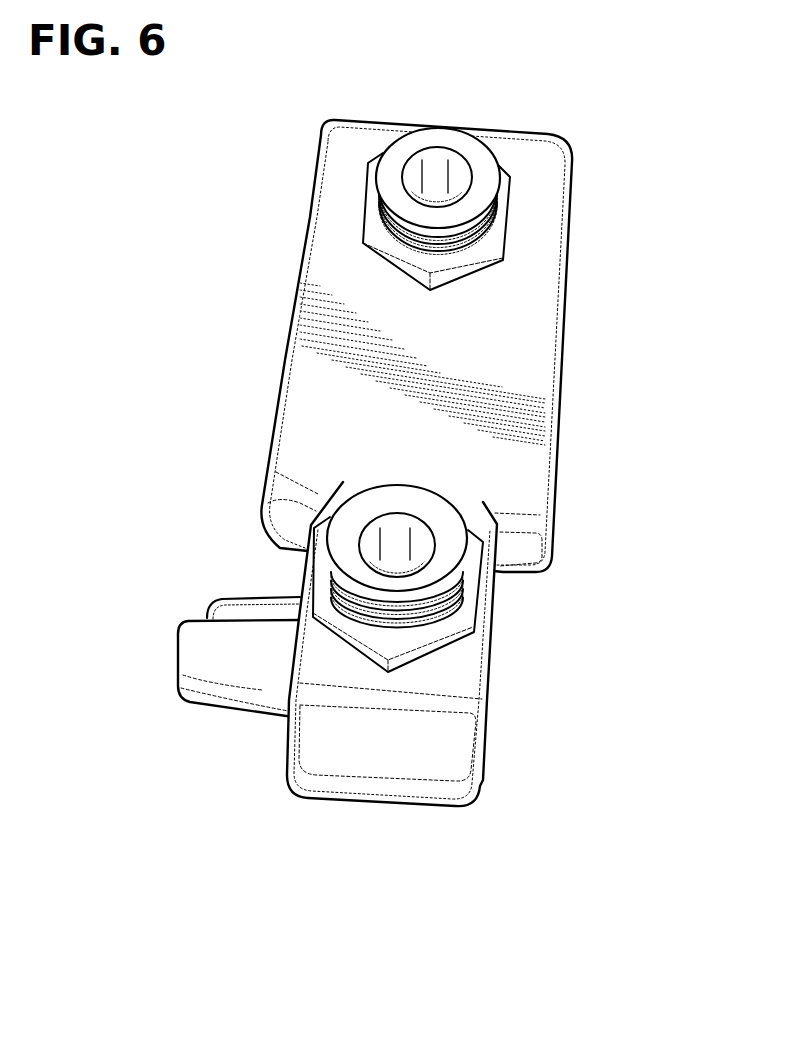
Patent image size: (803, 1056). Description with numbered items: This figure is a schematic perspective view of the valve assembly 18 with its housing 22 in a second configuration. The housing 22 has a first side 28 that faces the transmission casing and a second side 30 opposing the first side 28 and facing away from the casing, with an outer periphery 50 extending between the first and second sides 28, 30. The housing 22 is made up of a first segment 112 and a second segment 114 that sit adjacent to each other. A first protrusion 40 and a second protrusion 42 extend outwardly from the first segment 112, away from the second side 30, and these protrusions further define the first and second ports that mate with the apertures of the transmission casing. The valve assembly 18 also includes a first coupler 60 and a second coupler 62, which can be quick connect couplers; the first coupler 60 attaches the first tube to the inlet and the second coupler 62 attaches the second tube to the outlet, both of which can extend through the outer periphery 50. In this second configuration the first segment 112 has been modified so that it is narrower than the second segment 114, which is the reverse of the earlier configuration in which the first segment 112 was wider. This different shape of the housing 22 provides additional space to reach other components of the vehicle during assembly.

The valve assembly 18 is at (607, 137).
The housing 22 is at (520, 553).
The first side 28 is at (300, 588).
The second side 30 is at (487, 703).
The first protrusion 40 is at (227, 693).
The second protrusion 42 is at (232, 606).
The outer periphery 50 is at (547, 314).
The first coupler 60 is at (462, 608).
The second coupler 62 is at (494, 232).
The first segment 112 is at (302, 748).
The second segment 114 is at (307, 373).